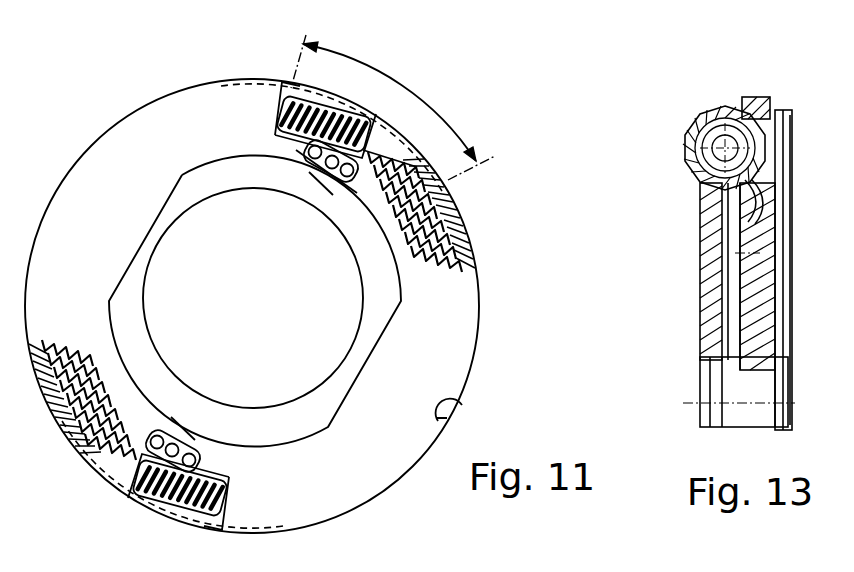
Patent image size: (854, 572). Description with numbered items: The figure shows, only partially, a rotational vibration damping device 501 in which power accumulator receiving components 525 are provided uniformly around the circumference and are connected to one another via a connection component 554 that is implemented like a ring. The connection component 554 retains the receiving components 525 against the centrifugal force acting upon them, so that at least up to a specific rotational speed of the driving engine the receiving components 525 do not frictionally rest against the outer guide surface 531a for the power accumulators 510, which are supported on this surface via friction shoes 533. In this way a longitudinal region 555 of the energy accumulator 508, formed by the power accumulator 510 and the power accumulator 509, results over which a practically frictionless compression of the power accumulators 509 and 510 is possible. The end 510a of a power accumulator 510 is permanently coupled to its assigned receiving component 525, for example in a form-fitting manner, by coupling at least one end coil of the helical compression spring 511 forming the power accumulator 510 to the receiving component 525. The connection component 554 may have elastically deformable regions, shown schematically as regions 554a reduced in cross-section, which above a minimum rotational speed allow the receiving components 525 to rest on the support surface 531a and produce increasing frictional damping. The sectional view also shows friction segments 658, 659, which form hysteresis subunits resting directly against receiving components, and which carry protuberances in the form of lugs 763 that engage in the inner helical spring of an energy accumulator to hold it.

In FIG. 11, the rotational vibration damping device 501 is at (512, 172).
In FIG. 11, the energy accumulator 508 is at (470, 116).
In FIG. 11, the power accumulator 509 is at (303, 120).
In FIG. 11, the power accumulator 510 is at (470, 217).
In FIG. 11, the end of power accumulator 510a is at (357, 192).
In FIG. 11, the helical compression spring 511 is at (392, 203).
In FIG. 11, the power accumulator receiving component 525 is at (291, 86).
In FIG. 11, the outer guide surface 531a is at (463, 397).
In FIG. 11, the friction shoe 533 is at (477, 240).
In FIG. 11, the connection component 554 is at (385, 296).
In FIG. 11, the region of connection component reduced in cross-section 554a is at (158, 235).
In FIG. 11, the longitudinal region of energy accumulator 555 is at (410, 84).
In FIG. 13, the friction segment 658 is at (738, 110).
In FIG. 13, the friction segment 659 is at (713, 137).
In FIG. 13, the lug 763 is at (718, 130).